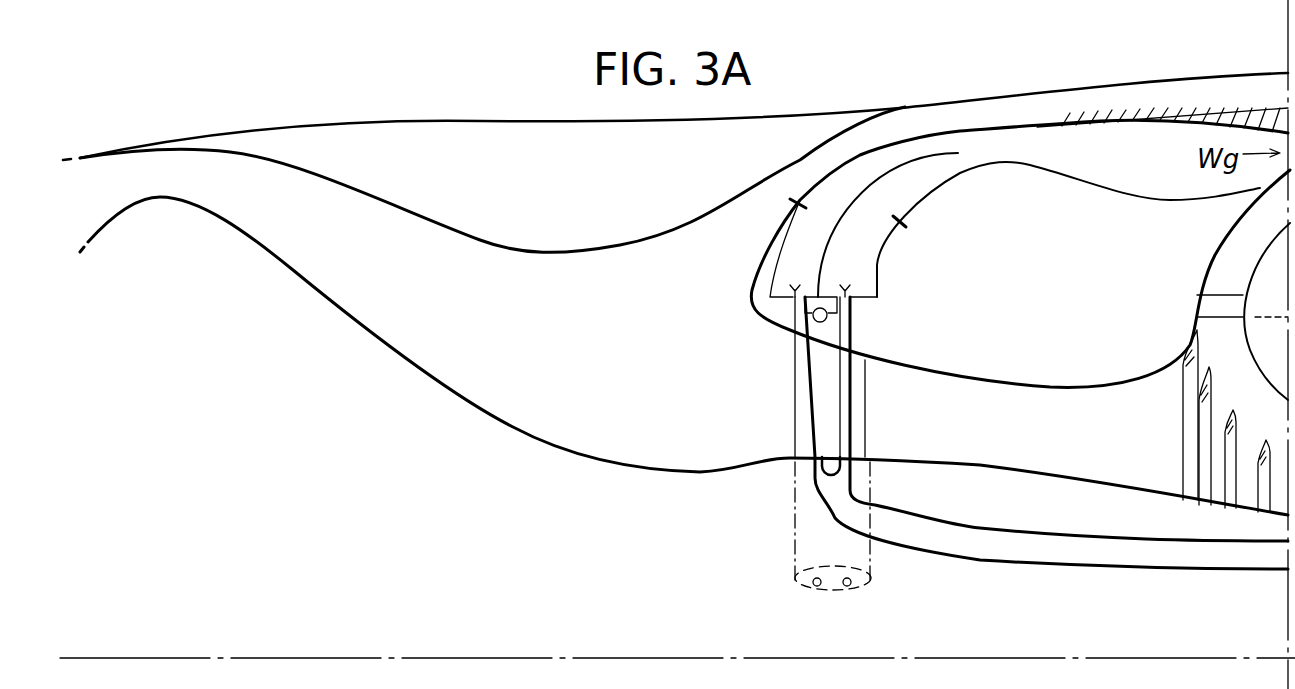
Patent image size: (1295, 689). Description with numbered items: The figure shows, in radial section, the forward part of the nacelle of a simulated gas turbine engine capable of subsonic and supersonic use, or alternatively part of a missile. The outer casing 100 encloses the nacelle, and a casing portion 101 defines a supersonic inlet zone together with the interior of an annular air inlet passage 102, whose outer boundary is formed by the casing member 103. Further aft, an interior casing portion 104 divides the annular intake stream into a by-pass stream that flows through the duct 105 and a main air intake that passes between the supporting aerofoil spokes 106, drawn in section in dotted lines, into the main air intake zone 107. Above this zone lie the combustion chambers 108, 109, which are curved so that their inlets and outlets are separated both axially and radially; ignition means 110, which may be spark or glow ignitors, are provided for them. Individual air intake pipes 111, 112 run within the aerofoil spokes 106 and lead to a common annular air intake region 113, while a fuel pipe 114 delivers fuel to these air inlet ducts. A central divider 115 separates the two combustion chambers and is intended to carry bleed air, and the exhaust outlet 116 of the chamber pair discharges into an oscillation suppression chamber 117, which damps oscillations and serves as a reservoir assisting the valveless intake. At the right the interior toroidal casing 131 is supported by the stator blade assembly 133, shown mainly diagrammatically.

The outer casing 100 is at (282, 126).
The casing portion 101 is at (302, 273).
The annular air inlet passage 102 is at (487, 323).
The casing member 103 is at (358, 187).
The interior casing portion 104 is at (762, 262).
The by-pass duct 105 is at (868, 159).
The supporting aerofoil spokes 106 is at (793, 412).
The main air intake zone 107 is at (1063, 444).
The combustion chamber 108 is at (815, 264).
The combustion chamber 109 is at (872, 264).
The ignition means 110 is at (799, 197).
The air intake pipe 111 is at (803, 355).
The air intake pipe 112 is at (847, 362).
The common annular air intake region 113 is at (845, 473).
The fuel pipe 114 is at (828, 318).
The central divider 115 is at (866, 191).
The exhaust outlet 116 is at (1000, 112).
The oscillation suppression chamber 117 is at (1102, 168).
The interior toroidal casing 131 is at (1269, 311).
The stator blade assembly 133 is at (1197, 302).